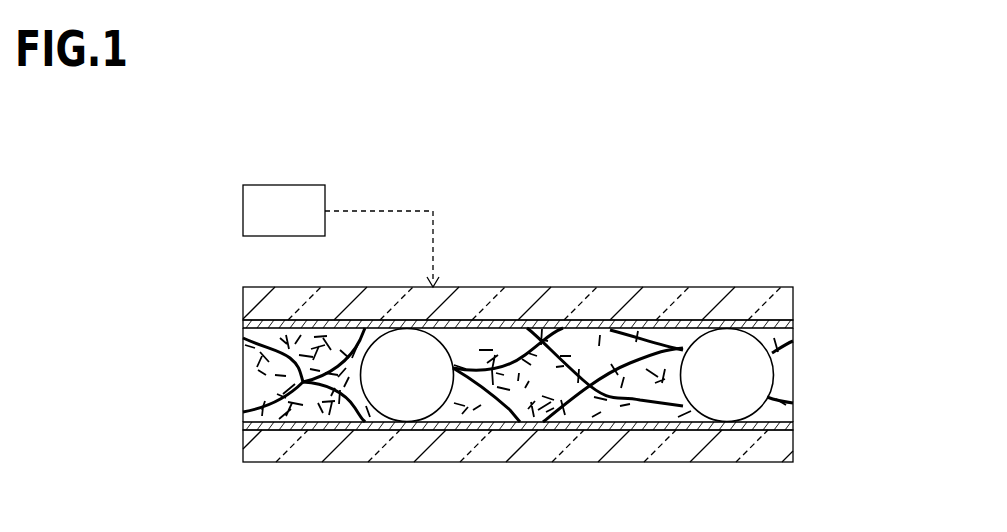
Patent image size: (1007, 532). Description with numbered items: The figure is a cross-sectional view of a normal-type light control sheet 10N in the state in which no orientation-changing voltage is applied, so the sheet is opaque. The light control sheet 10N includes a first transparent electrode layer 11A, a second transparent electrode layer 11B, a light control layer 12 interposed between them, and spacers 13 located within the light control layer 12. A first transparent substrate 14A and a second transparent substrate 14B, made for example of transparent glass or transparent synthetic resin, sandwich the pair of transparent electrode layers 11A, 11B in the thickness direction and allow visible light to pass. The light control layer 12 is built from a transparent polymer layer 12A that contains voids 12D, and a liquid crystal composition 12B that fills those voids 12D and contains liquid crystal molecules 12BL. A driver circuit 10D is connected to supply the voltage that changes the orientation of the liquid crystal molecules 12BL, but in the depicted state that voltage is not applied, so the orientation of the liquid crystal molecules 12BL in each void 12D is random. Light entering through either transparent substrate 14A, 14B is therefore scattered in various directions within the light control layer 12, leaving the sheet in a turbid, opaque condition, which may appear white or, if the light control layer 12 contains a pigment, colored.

The driver circuit 10D is at (243, 210).
The light control sheet 10N is at (863, 276).
The first transparent electrode layer 11A is at (793, 323).
The second transparent electrode layer 11B is at (793, 425).
The light control layer 12 is at (243, 385).
The transparent polymer layer 12A is at (355, 340).
The liquid crystal composition 12B is at (557, 426).
The liquid crystal molecules 12BL is at (655, 335).
The voids 12D is at (355, 413).
The spacers 13 is at (735, 345).
The first transparent substrate 14A is at (243, 300).
The second transparent substrate 14B is at (243, 448).